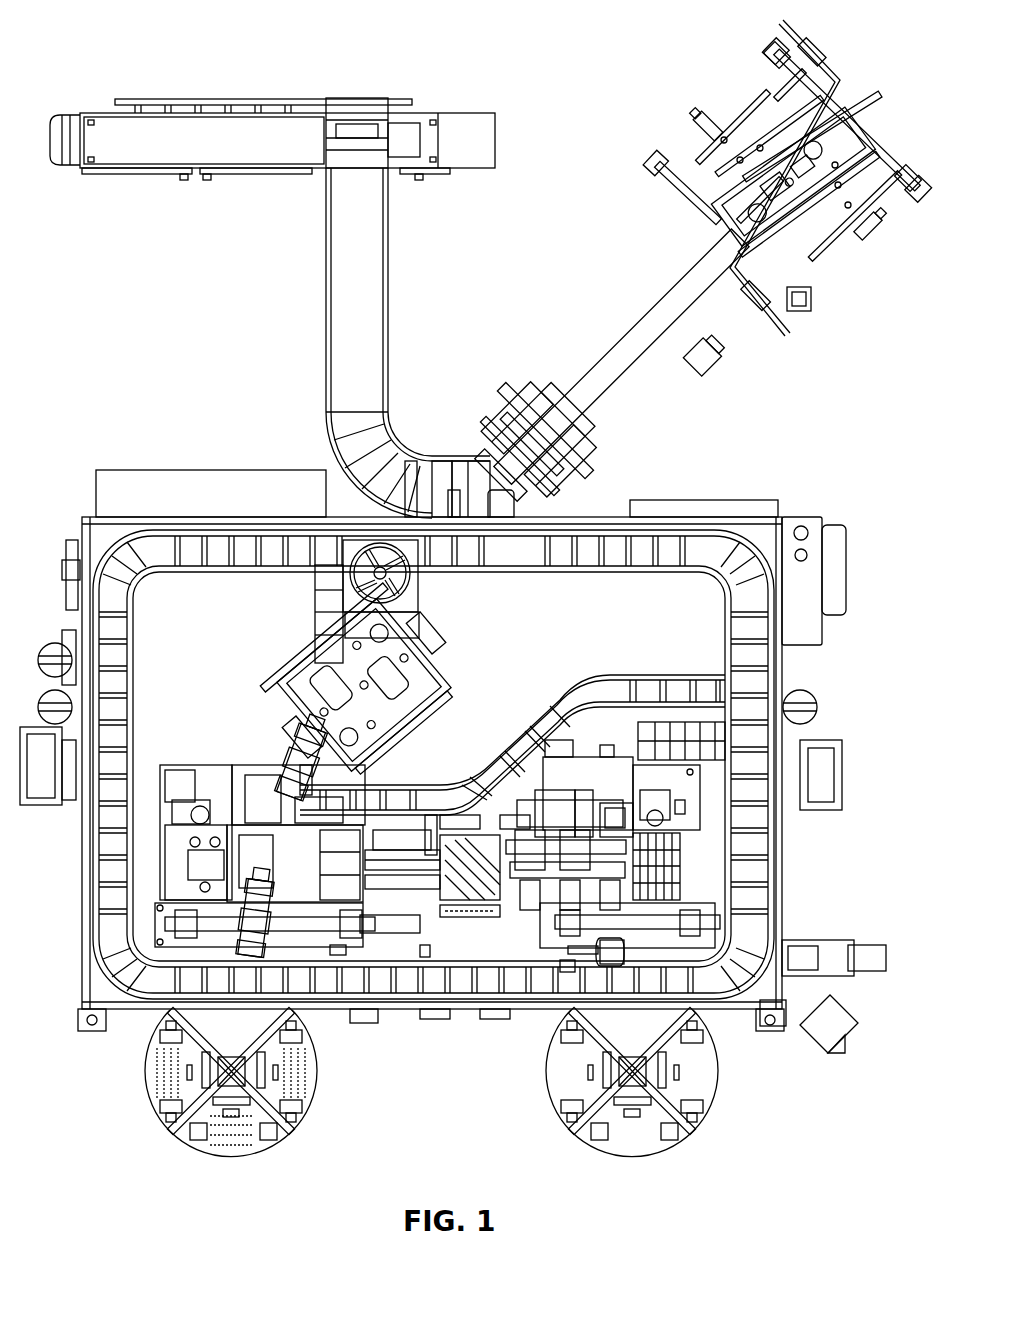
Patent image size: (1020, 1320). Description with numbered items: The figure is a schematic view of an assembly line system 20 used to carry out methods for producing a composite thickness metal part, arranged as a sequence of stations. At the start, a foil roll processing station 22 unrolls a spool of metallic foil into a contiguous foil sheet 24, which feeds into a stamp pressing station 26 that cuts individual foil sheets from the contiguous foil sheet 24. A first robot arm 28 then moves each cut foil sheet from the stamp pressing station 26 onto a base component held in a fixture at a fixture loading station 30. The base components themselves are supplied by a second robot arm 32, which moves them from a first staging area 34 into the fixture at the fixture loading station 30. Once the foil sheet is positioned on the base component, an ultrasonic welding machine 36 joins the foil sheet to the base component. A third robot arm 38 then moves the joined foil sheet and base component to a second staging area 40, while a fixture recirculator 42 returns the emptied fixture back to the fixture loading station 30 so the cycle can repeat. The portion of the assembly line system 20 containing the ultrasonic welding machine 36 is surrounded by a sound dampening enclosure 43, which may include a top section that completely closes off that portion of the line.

The assembly line system 20 is at (150, 45).
The foil roll processing station 22 is at (700, 78).
The contiguous foil sheet 24 is at (612, 310).
The stamp pressing station 26 is at (291, 648).
The first robot arm 28 is at (318, 792).
The fixture loading station 30 is at (172, 883).
The second robot arm 32 is at (277, 946).
The first staging area 34 is at (145, 1090).
The ultrasonic welding machine 36 is at (588, 777).
The third robot arm 38 is at (637, 950).
The second staging area 40 is at (694, 1132).
The fixture recirculator 42 is at (690, 865).
The sound dampening enclosure 43 is at (710, 540).